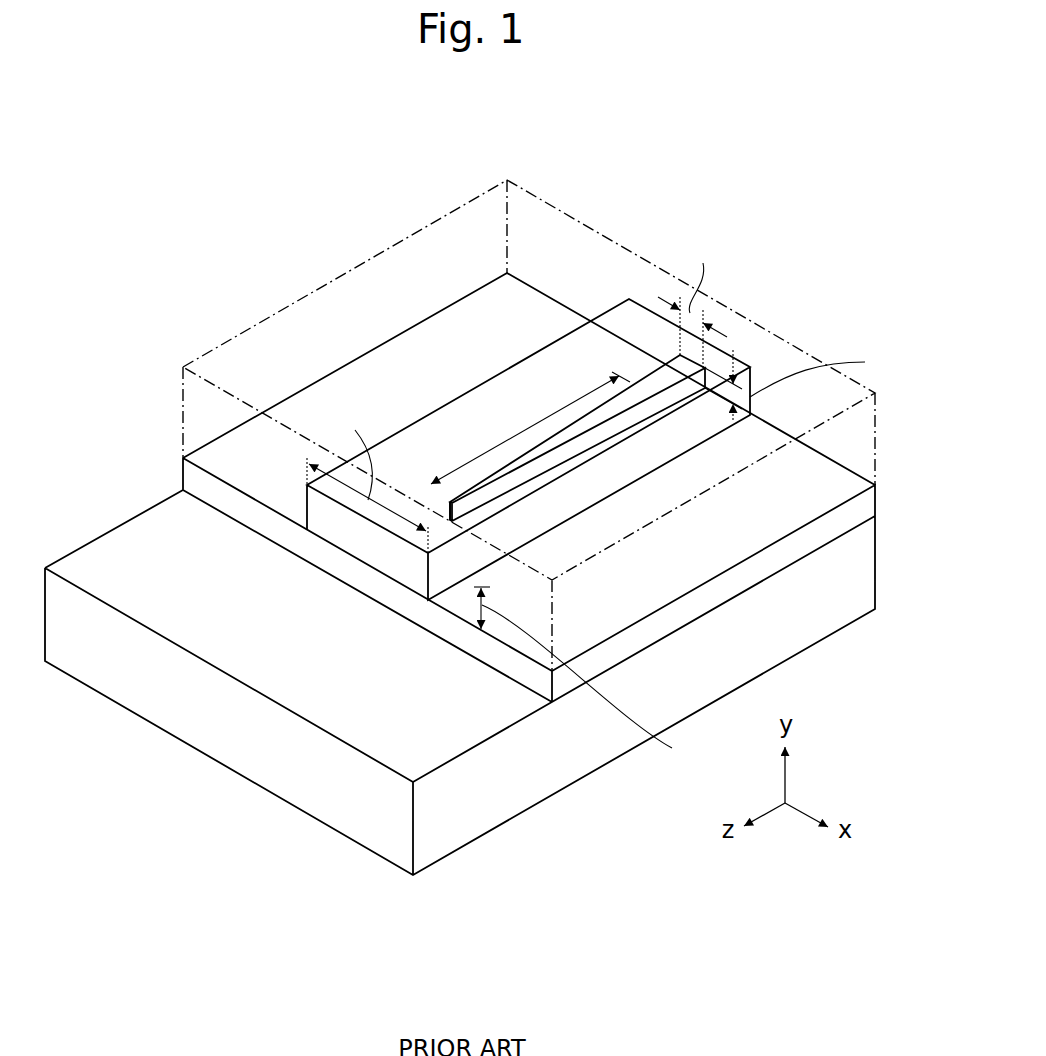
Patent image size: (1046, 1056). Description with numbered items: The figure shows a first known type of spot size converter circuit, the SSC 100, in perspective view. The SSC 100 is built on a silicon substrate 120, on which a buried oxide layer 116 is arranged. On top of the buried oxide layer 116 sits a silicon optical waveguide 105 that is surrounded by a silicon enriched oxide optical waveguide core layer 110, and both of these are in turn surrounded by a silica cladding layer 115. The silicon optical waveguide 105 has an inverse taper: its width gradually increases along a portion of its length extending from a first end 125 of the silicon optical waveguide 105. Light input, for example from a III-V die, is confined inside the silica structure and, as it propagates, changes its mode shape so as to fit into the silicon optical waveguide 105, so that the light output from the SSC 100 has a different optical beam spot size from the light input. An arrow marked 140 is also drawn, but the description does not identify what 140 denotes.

The spot size converter circuit 100 is at (768, 292).
The silicon optical waveguide 105 is at (657, 377).
The silicon enriched oxide optical waveguide core layer 110 is at (562, 365).
The silica cladding layer 115 is at (259, 324).
The buried oxide layer 116 is at (730, 588).
The silicon substrate 120 is at (277, 770).
The first end of the silicon optical waveguide 125 is at (446, 503).
The output coupling region 140 is at (803, 332).